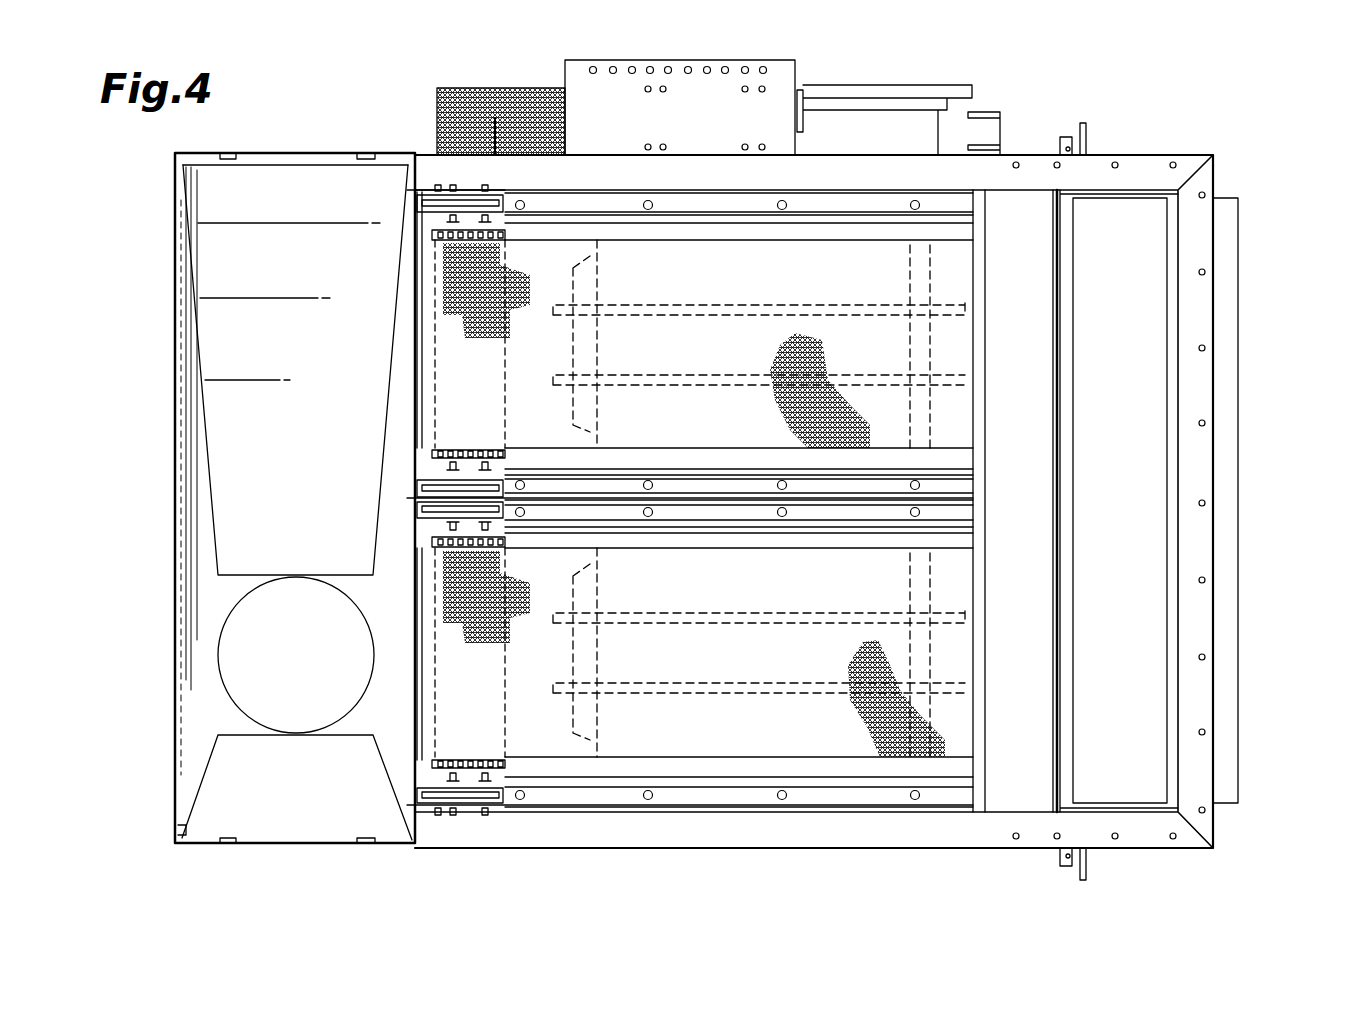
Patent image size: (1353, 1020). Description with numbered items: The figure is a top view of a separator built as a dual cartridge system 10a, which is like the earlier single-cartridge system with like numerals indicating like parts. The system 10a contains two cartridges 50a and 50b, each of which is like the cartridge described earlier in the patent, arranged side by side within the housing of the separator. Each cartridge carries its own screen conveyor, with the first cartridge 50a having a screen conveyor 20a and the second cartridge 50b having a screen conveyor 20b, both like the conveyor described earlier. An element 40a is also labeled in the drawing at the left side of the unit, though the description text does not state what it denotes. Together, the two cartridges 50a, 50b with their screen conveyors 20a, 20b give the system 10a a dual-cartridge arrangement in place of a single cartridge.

The dual cartridge system 10a is at (489, 82).
The screen conveyor 20a is at (822, 362).
The screen conveyor 20b is at (452, 602).
The fan housing 40a is at (289, 341).
The cartridge 50a is at (973, 354).
The cartridge 50b is at (973, 678).